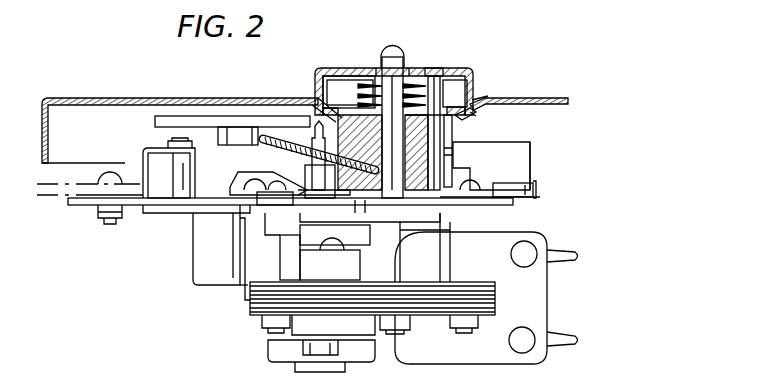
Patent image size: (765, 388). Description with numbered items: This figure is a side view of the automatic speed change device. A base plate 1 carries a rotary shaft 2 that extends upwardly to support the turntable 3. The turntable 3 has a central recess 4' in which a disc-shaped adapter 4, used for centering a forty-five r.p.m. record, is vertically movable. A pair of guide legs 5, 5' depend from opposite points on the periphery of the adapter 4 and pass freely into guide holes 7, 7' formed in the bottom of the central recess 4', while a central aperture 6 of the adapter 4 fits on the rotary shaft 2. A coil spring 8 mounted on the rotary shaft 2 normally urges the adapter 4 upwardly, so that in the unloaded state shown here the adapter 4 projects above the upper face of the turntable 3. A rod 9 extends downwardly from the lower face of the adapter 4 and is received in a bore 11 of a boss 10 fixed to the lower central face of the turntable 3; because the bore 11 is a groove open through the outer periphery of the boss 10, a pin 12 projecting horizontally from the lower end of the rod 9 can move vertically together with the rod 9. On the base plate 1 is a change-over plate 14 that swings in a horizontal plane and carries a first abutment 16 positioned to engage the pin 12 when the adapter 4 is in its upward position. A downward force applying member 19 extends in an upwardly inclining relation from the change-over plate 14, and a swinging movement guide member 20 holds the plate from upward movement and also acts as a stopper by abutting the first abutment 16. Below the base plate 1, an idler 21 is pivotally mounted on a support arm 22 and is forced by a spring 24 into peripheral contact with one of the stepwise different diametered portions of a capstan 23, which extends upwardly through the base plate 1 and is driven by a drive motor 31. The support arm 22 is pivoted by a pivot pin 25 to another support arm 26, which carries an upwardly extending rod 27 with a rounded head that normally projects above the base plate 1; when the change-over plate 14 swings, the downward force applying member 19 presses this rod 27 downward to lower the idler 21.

The base plate 1 is at (80, 210).
The rotary shaft 2 is at (398, 62).
The turntable 3 is at (122, 98).
The adapter 4 is at (471, 75).
The central recess 4' is at (519, 89).
The guide leg 5 is at (394, 110).
The guide leg 5' is at (491, 75).
The central aperture 6 is at (420, 70).
The guide hole 7 is at (349, 92).
The guide hole 7' is at (492, 122).
The coil spring 8 is at (368, 82).
The rod 9 is at (455, 93).
The boss 10 is at (412, 222).
The bore 11 is at (452, 123).
The pin 12 is at (460, 152).
The change-over plate 14 is at (198, 222).
The first abutment 16 is at (530, 158).
The downward force applying member 19 is at (228, 213).
The swinging movement guide member 20 is at (538, 186).
The idler 21 is at (201, 116).
The support arm 22 is at (232, 145).
The capstan 23 is at (318, 150).
The spring 24 is at (272, 148).
The pivot pin 25 is at (175, 165).
The support arm 26 is at (214, 285).
The rod 27 is at (240, 195).
The drive motor 31 is at (540, 292).